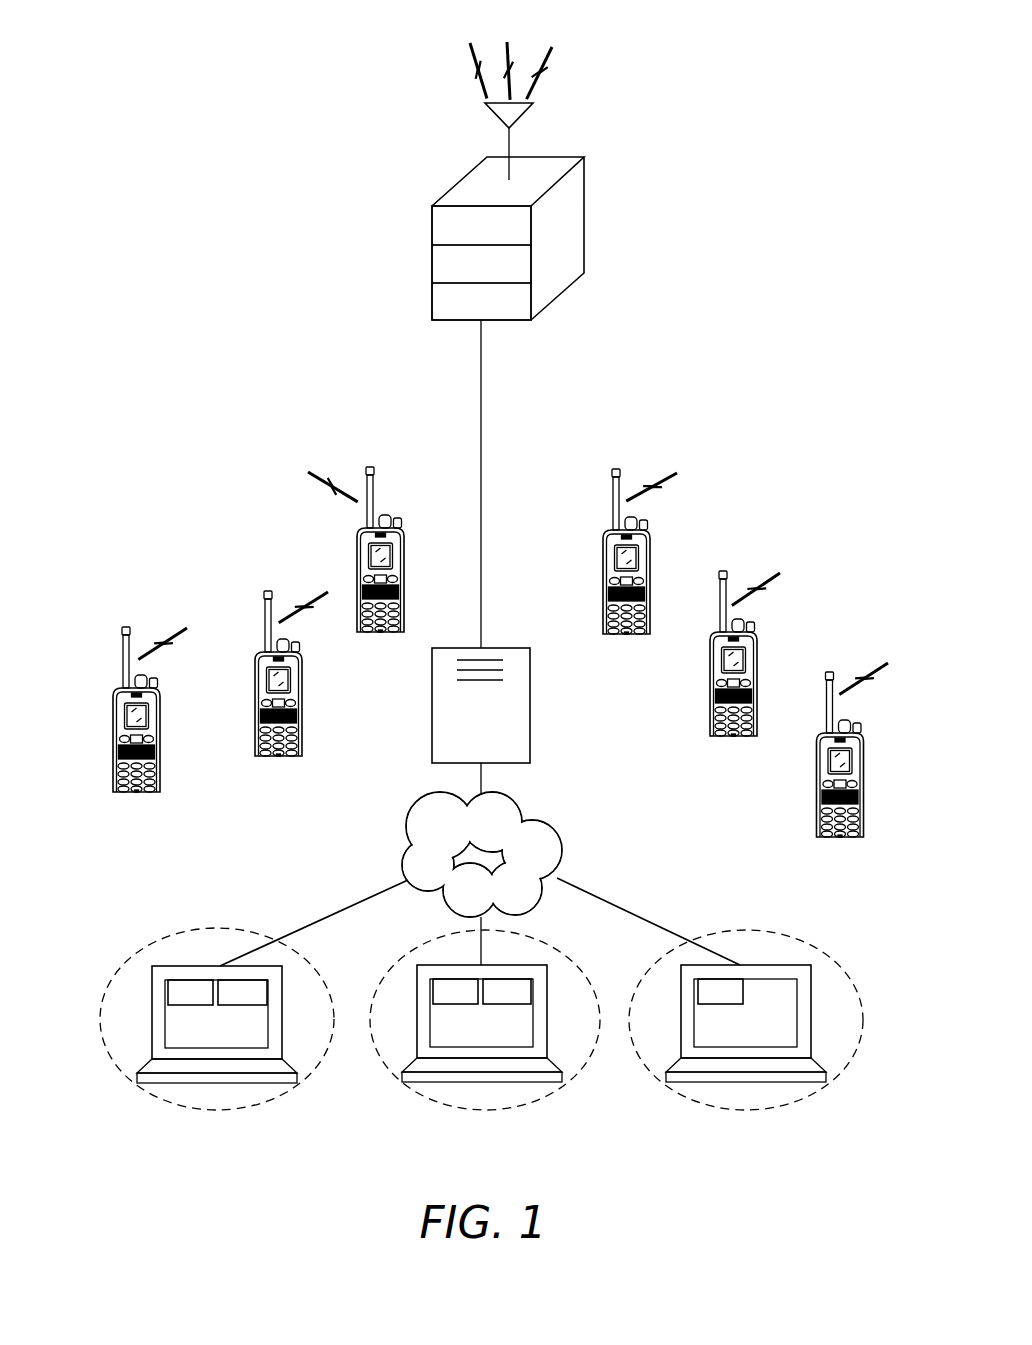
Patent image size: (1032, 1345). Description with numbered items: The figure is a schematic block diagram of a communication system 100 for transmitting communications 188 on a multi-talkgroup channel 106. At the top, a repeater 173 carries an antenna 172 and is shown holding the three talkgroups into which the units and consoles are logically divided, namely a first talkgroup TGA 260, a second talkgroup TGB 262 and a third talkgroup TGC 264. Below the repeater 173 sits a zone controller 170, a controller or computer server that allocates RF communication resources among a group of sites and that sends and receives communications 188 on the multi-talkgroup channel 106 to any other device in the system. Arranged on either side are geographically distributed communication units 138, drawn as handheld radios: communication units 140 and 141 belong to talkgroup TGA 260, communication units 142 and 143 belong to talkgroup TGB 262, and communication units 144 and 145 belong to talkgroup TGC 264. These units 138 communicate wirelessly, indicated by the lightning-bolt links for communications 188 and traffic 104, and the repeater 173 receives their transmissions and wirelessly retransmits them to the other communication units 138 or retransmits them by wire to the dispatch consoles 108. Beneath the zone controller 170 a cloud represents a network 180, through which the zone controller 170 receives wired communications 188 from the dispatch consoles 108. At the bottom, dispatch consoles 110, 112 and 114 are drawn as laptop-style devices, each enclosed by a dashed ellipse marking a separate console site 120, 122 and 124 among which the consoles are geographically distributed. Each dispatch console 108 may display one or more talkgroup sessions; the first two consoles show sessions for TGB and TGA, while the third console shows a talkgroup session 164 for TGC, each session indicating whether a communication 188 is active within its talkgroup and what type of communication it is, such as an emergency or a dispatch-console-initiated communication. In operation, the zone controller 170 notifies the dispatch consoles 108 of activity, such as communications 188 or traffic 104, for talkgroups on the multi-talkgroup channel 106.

The communication system 100 is at (625, 406).
The traffic 104 is at (507, 50).
The multi-talkgroup channel 106 is at (552, 53).
The dispatch console 108 is at (138, 1050).
The dispatch console 110 is at (148, 1083).
The dispatch console 112 is at (412, 1083).
The dispatch console 114 is at (677, 1083).
The console site 120 is at (217, 1112).
The console site 122 is at (482, 1112).
The console site 124 is at (748, 1112).
The communication unit 138 is at (395, 500).
The communication unit 140 is at (115, 731).
The communication unit 141 is at (605, 584).
The communication unit 142 is at (257, 713).
The communication unit 143 is at (712, 684).
The communication unit 144 is at (358, 541).
The communication unit 145 is at (818, 784).
The talkgroup session 164 is at (698, 993).
The zone controller 170 is at (531, 735).
The antenna 172 is at (512, 128).
The repeater 173 is at (575, 193).
The network 180 is at (533, 800).
The communication 188 is at (155, 653).
The talkgroup TGA 260 is at (432, 227).
The talkgroup TGB 262 is at (432, 264).
The talkgroup TGC 264 is at (432, 302).